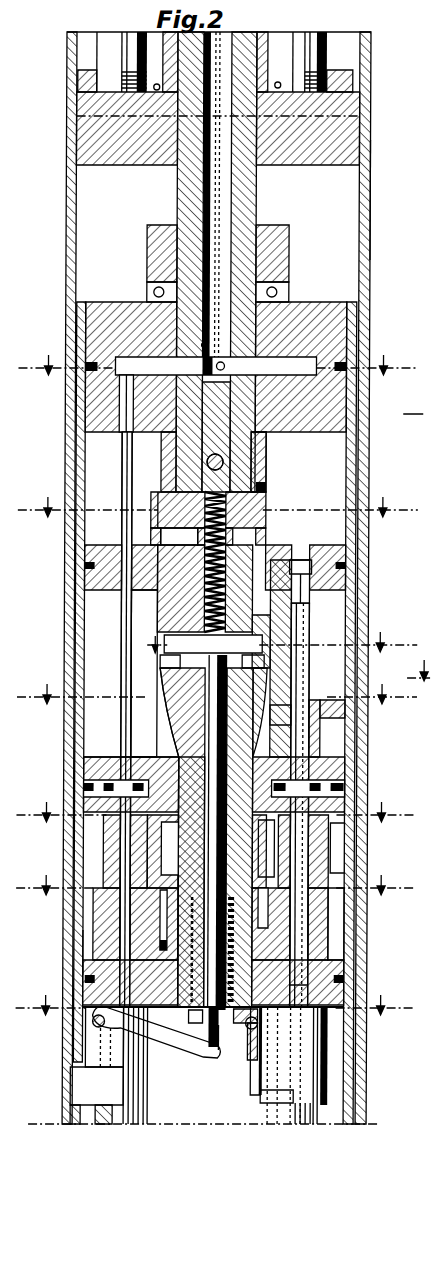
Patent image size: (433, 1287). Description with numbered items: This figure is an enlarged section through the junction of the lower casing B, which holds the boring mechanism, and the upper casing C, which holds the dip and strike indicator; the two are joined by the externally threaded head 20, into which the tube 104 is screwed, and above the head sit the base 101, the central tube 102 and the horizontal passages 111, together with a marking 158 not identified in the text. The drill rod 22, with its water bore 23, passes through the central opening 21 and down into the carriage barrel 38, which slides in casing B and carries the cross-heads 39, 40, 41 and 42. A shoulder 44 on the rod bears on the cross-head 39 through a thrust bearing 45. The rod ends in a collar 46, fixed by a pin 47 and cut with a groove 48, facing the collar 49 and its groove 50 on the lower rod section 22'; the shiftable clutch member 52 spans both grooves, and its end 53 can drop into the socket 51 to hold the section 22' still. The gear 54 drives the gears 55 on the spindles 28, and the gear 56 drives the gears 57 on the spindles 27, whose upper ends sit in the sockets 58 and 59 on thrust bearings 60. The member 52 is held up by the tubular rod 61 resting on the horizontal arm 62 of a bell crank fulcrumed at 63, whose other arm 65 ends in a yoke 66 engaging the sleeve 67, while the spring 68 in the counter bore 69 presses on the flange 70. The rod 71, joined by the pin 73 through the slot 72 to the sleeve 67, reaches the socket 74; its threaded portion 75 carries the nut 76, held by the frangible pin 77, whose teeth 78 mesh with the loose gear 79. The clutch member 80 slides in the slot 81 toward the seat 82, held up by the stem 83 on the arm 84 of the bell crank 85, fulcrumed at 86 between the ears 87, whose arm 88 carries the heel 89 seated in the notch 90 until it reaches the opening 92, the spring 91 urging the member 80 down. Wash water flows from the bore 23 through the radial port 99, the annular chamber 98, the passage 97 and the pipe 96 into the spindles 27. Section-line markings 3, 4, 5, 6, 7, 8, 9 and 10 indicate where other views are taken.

The cylindrical head 20 is at (340, 136).
The central opening 21 is at (258, 148).
The drill rod 22 is at (114, 510).
The central longitudinal bore 23 is at (225, 220).
The drill spindles 27 is at (106, 857).
The drill spindles 28 is at (333, 913).
The cylindrical sleeve or barrel 38 is at (373, 452).
The upper cross-head 39 is at (310, 318).
The cross-head 40 is at (312, 556).
The cross-head 41 is at (100, 760).
The cross-head 42 is at (350, 966).
The external annular shoulder 44 is at (272, 246).
The antifriction thrust bearing 45 is at (283, 290).
The collar 46 is at (270, 472).
The pin 47 is at (226, 463).
The diametric groove 48 is at (268, 486).
The fixed collar 49 is at (132, 600).
The deep diametric groove 50 is at (268, 530).
The socket 51 is at (160, 542).
The shiftable clutch member 52 is at (268, 502).
The end of clutch member 53 is at (153, 500).
The gear 54 is at (165, 843).
The driven gear 55 is at (332, 849).
The driving gear 56 is at (170, 915).
The driven gear 57 is at (106, 911).
The socket 58 is at (95, 785).
The socket 59 is at (348, 772).
The anti-friction thrust bearing 60 is at (88, 791).
The tubular rod or sleeve 61 is at (262, 548).
The horizontal arm 62 is at (223, 1052).
The fulcrum 63 is at (238, 1040).
The depending arm 65 is at (252, 1082).
The fork or yoke 66 is at (270, 1104).
The sleeve 67 is at (330, 1062).
The coiled spring 68 is at (178, 1020).
The counter bore 69 is at (240, 936).
The annular flange 70 is at (199, 1027).
The endwise movable rod 71 is at (300, 990).
The longitudinal slot 72 is at (302, 1122).
The pin 73 is at (300, 1052).
The socket 74 is at (333, 587).
The screw threaded portion 75 is at (312, 632).
The nut 76 is at (320, 622).
The frangible pin 77 is at (312, 732).
The gear teeth 78 is at (348, 704).
The driving gear 79 is at (170, 733).
The shiftable clutch member 80 is at (168, 640).
The diametric slot 81 is at (261, 634).
The seat 82 is at (163, 661).
The stem 83 is at (210, 688).
The horizontal arm 84 is at (190, 1060).
The bell crank 85 is at (120, 1060).
The fulcrum 86 is at (97, 1022).
The ears 87 is at (110, 1036).
The depending arm 88 is at (100, 1080).
The heel 89 is at (80, 1090).
The notch or opening 90 is at (83, 1124).
The helical spring 91 is at (179, 541).
The notch or opening 92 is at (413, 406).
The vertical tube or pipe 96 is at (121, 440).
The upright passage 97 is at (118, 393).
The annular chamber 98 is at (147, 363).
The radial port 99 is at (200, 340).
The base 101 is at (373, 82).
The centrally disposed tube 102 is at (264, 47).
The tube 104 is at (258, 34).
The horizontal passage 111 is at (142, 42).
The threads 158 is at (322, 40).
The lower drill rod section 22' is at (174, 588).
The lower cylindrical casing B is at (372, 208).
The upper cylindrical casing C is at (372, 62).
The section line 3 is at (217, 694).
The section line 4 is at (216, 812).
The section line 5 is at (216, 886).
The section line 6 is at (216, 507).
The tubular stem 7 is at (216, 1006).
The section line 8 is at (417, 670).
The section line 9 is at (218, 365).
The section line 10 is at (275, 642).